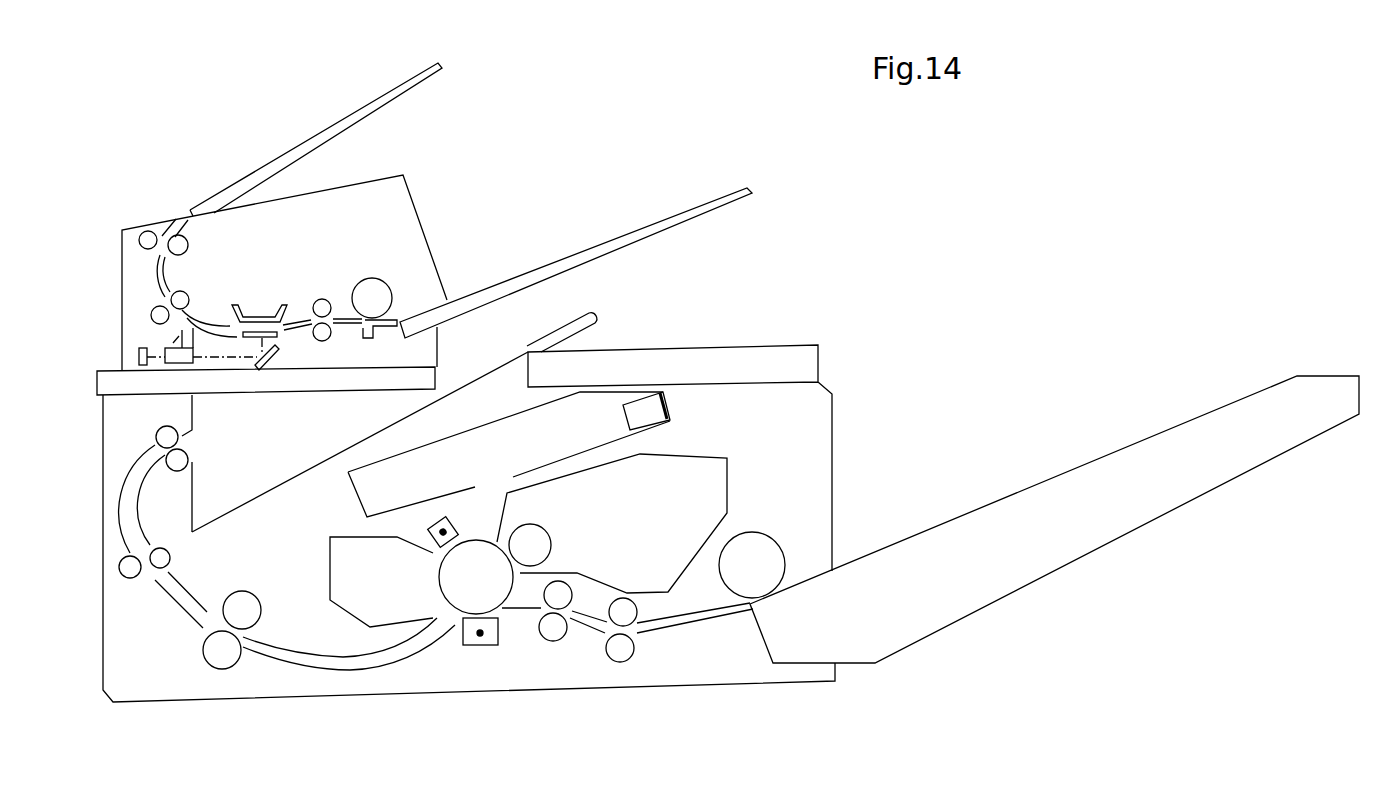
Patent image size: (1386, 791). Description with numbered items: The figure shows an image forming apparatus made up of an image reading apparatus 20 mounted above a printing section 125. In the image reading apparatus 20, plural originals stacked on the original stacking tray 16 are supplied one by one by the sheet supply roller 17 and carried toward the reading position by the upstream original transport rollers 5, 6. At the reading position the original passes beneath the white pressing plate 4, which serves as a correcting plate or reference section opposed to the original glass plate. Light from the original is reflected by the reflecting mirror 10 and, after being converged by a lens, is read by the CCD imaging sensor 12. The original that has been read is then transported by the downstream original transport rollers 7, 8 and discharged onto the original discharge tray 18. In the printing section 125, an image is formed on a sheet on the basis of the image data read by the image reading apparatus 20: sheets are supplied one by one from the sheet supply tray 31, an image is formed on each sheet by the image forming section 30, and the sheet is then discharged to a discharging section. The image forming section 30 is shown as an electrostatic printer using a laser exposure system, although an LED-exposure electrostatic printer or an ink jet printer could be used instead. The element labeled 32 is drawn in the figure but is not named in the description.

The white pressing plate 4 is at (249, 304).
The upstream original transport roller 5 is at (320, 299).
The upstream original transport roller 6 is at (331, 335).
The downstream original transport roller 7 is at (187, 293).
The downstream original transport roller 8 is at (155, 308).
The reflecting mirror 10 is at (283, 353).
The CCD imaging sensor 12 is at (139, 351).
The original stacking tray 16 is at (588, 248).
The sheet supply roller 17 is at (371, 278).
The original discharge tray 18 is at (307, 143).
The image reading apparatus 20 is at (120, 264).
The image forming section 30 is at (478, 646).
The sheet supply tray 31 is at (1220, 408).
The sheet cassette 32 is at (332, 453).
The printing section 125 is at (103, 468).